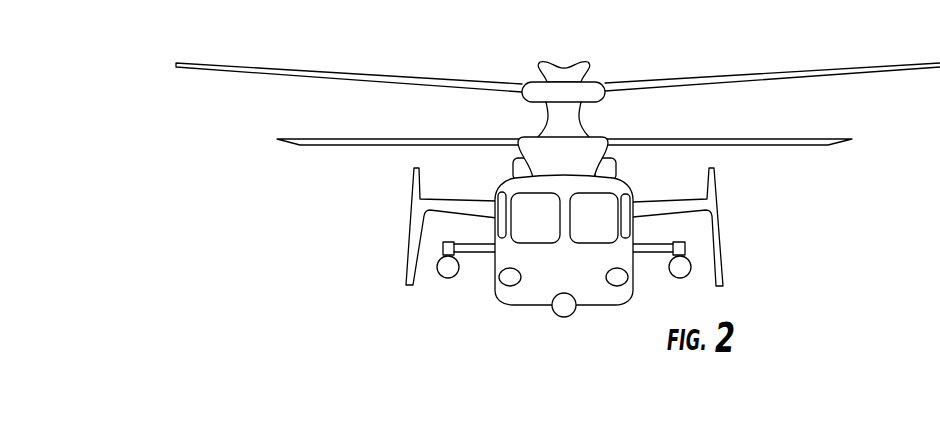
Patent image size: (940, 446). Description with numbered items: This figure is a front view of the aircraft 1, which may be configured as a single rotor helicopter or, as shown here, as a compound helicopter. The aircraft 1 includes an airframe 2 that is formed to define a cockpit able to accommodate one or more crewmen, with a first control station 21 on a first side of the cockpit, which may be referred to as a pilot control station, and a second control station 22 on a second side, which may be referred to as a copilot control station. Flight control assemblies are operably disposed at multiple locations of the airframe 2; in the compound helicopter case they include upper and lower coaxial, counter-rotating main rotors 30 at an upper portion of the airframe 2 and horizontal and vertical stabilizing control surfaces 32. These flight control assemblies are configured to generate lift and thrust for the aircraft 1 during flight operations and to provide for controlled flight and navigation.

The aircraft 1 is at (558, 207).
The airframe 2 is at (588, 257).
The first control station 21 is at (538, 238).
The second control station 22 is at (603, 205).
The upper and lower coaxial, counter-rotating main rotors 30 is at (653, 90).
The horizontal and vertical stabilizing control surfaces 32 is at (467, 201).